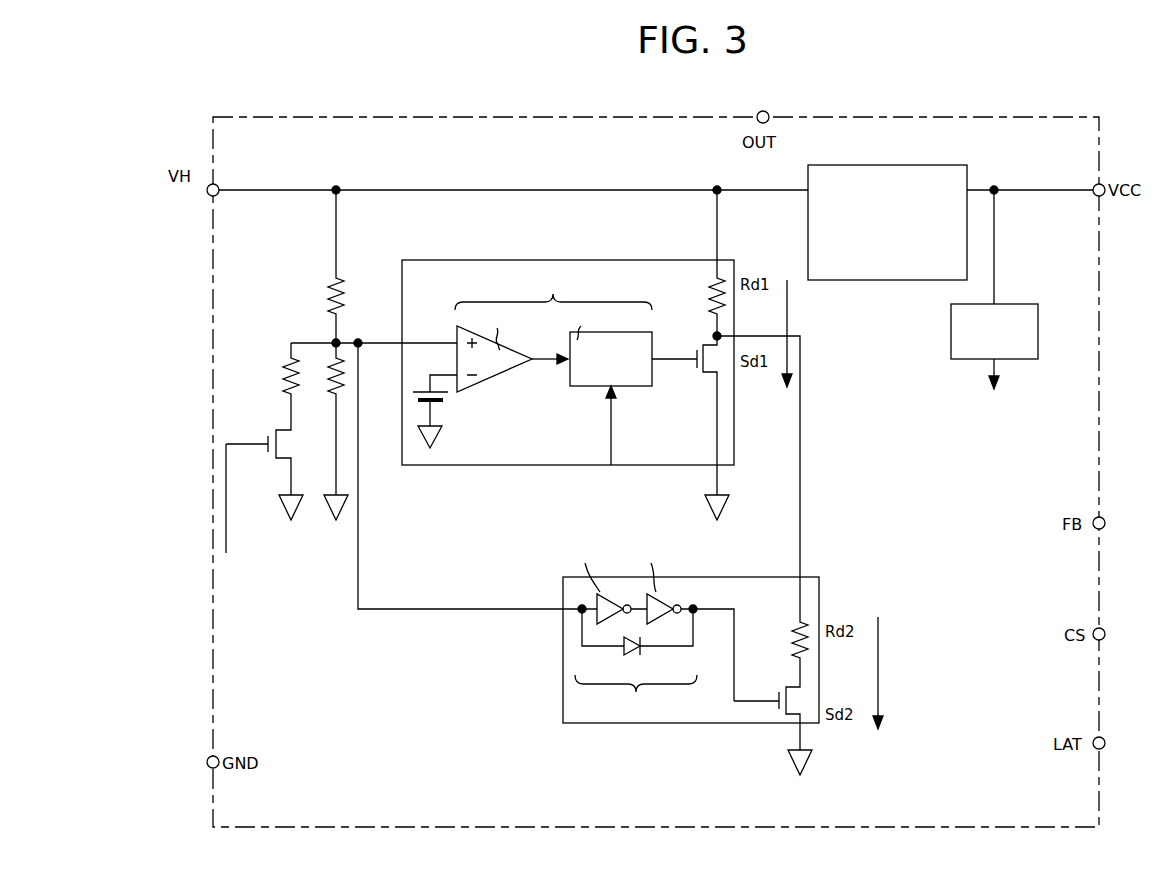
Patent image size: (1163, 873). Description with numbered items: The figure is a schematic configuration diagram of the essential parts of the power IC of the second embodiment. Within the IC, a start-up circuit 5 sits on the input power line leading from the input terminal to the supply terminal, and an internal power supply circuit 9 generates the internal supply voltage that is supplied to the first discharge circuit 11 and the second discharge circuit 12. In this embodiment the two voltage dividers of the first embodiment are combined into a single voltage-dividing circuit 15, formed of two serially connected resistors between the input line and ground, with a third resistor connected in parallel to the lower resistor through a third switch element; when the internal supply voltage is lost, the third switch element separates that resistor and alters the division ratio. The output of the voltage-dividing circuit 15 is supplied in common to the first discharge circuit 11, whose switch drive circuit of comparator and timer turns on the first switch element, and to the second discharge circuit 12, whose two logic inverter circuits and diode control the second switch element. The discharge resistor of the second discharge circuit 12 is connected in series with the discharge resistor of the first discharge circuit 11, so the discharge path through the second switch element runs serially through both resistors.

The start-up circuit 5 is at (860, 281).
The internal power supply circuit 9 is at (1010, 305).
The first discharge circuit 11 is at (609, 262).
The second discharge circuit 12 is at (587, 712).
The voltage-dividing circuit 15 is at (286, 297).